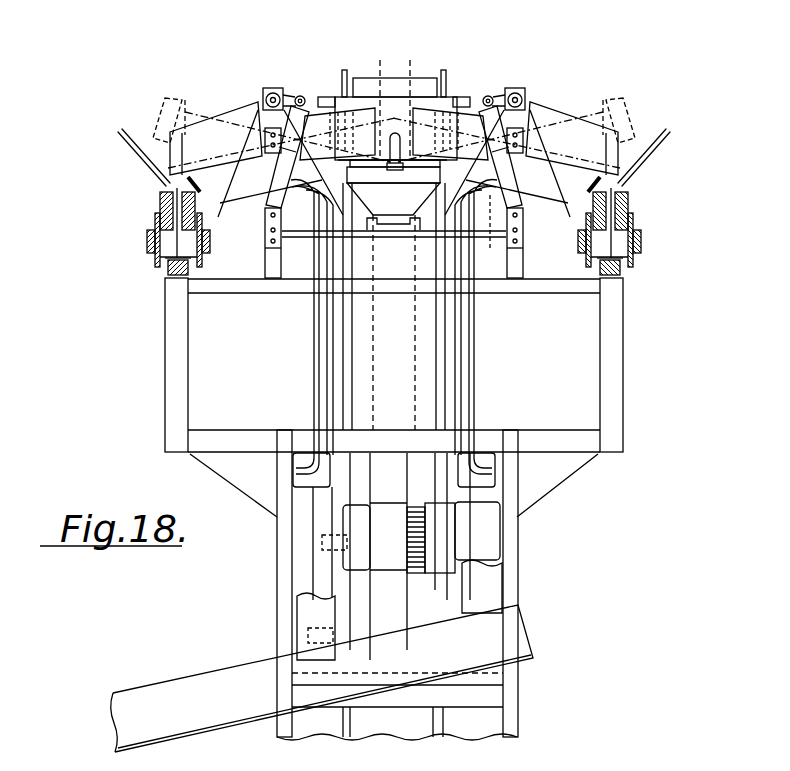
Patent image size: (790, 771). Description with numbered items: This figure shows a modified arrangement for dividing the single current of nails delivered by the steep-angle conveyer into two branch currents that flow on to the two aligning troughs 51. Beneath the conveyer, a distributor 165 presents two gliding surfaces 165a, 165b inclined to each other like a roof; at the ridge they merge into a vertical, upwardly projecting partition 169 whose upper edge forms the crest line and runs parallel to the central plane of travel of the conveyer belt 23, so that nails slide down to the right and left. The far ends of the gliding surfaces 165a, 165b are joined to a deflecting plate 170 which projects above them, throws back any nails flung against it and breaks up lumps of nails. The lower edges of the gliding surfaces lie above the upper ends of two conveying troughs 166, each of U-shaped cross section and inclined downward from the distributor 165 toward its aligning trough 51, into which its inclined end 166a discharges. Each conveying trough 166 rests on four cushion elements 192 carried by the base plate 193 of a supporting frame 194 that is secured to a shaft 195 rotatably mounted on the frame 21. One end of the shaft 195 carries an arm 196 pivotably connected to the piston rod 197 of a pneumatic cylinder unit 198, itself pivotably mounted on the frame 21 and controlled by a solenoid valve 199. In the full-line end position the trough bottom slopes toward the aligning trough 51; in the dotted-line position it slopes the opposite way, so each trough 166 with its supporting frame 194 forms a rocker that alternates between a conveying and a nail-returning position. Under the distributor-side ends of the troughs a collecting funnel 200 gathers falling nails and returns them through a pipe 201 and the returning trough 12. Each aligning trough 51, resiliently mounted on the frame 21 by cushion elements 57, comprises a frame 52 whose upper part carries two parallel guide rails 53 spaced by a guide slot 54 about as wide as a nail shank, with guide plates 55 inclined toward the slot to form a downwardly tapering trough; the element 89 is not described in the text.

The returning trough 12 is at (215, 688).
The frame 21 is at (173, 385).
The conveyer belt 23 is at (383, 82).
The aligning trough 51 is at (150, 150).
The frame 52 is at (157, 257).
The guide rails 53 is at (176, 210).
The guide slot 54 is at (155, 236).
The guide plates 55 is at (125, 148).
The cushion elements 57 is at (167, 267).
The pin 89 is at (177, 219).
The distributor 165 is at (391, 143).
The gliding surface 165a is at (378, 112).
The gliding surface 165b is at (412, 105).
The conveying trough 166 is at (187, 100).
The end of conveying trough bottom 166a is at (182, 172).
The partition 169 is at (398, 130).
The deflecting plate 170 is at (425, 100).
The cushion elements 192 is at (226, 208).
The base plate 193 is at (496, 231).
The supporting frame 194 is at (203, 135).
The shaft 195 is at (273, 93).
The arm 196 is at (300, 96).
The piston rod 197 is at (258, 120).
The pneumatic cylinder unit 198 is at (277, 195).
The solenoid valve 199 is at (302, 463).
The collecting funnel 200 is at (413, 211).
The pipe 201 is at (390, 330).